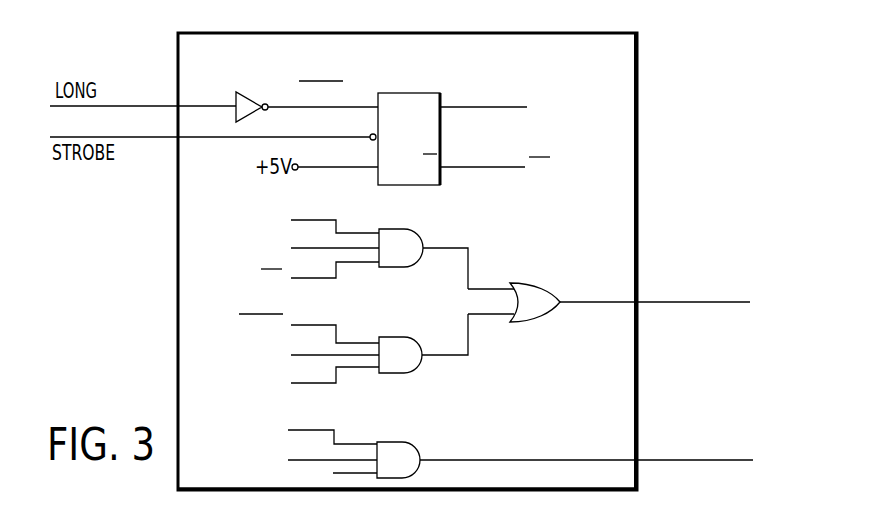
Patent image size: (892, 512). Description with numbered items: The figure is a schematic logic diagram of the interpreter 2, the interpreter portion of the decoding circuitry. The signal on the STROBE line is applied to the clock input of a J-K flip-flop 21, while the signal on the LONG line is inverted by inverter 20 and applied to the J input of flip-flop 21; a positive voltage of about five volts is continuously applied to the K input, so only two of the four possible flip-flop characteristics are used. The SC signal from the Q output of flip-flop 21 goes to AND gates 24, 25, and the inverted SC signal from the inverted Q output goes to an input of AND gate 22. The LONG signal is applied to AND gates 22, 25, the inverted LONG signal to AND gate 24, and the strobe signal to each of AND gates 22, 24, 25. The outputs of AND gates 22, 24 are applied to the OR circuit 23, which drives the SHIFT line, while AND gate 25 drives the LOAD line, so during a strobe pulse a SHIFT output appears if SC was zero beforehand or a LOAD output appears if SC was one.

The interpreter 2 is at (600, 152).
The inverter 20 is at (246, 92).
The J-K flip-flop 21 is at (404, 93).
The AND gate 22 is at (416, 236).
The OR circuit 23 is at (549, 294).
The AND gate 24 is at (407, 347).
The AND gate 25 is at (410, 453).